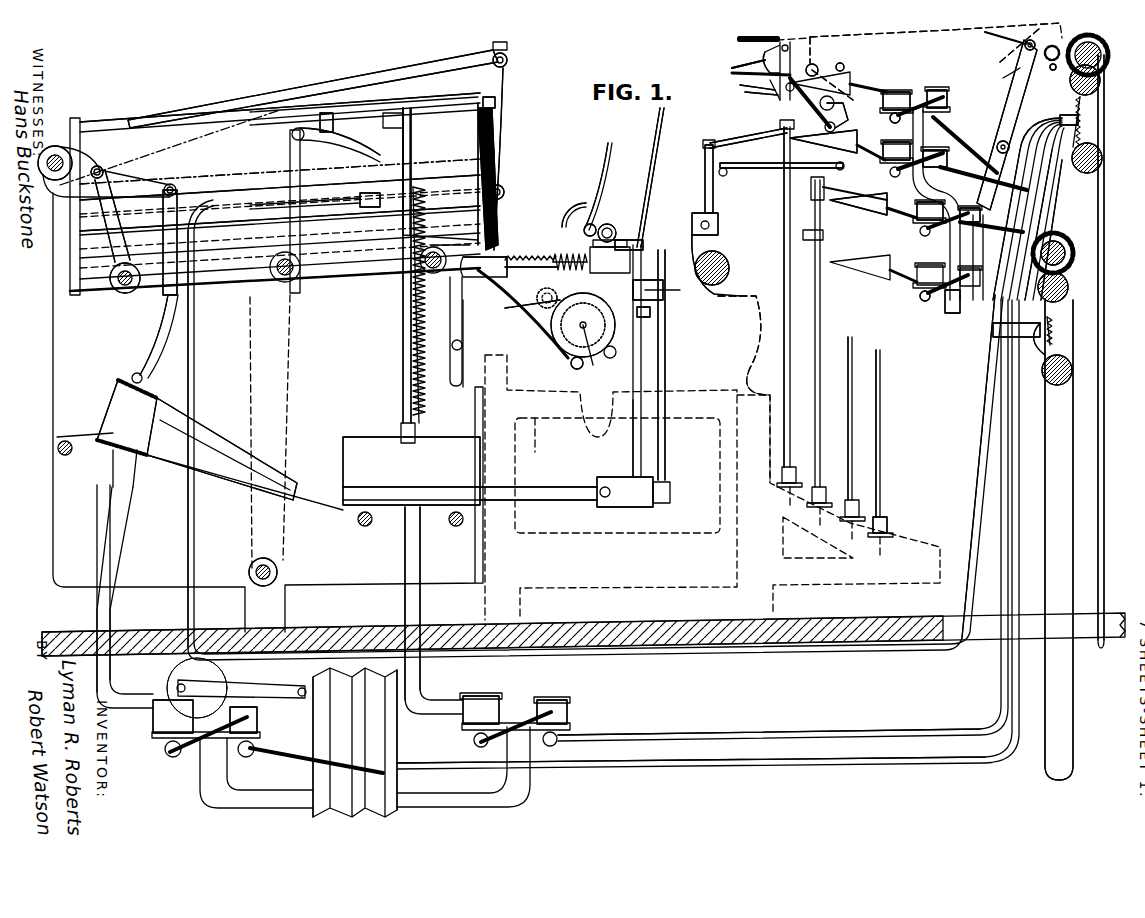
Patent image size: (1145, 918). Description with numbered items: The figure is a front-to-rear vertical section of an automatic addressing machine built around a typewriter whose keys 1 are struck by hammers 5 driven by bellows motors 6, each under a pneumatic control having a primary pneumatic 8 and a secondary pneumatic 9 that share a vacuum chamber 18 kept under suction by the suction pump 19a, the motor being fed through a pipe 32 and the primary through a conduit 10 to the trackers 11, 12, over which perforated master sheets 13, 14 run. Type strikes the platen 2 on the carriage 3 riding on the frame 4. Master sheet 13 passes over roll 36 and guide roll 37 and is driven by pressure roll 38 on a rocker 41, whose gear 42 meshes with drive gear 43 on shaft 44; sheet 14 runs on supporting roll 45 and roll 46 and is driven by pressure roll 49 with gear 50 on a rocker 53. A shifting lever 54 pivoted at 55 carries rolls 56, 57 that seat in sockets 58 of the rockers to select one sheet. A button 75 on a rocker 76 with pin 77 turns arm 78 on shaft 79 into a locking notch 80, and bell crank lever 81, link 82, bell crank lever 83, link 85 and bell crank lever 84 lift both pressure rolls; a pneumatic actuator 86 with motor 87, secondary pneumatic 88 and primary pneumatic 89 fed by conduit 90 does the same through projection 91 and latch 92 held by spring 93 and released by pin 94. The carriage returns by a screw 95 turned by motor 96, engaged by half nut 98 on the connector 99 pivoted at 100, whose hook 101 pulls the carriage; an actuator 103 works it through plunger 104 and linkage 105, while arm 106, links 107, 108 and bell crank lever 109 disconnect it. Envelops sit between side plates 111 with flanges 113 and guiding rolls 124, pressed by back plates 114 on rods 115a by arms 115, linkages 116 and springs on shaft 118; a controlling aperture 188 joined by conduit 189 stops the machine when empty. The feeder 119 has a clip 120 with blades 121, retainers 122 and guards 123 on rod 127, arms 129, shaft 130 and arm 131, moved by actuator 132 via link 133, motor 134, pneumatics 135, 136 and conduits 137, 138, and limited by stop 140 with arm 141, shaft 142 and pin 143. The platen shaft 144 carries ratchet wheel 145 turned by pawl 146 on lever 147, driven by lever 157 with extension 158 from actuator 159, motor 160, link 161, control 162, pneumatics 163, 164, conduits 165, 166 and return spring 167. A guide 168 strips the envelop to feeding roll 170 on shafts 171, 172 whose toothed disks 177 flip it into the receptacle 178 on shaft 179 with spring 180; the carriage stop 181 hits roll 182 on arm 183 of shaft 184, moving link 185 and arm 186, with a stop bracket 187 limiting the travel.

The keys 1 is at (862, 525).
The platen 2 is at (552, 340).
The carriage 3 is at (505, 306).
The typewriter frame 4 is at (755, 365).
The hammers 5 is at (855, 380).
The pneumatic motor 6 is at (845, 222).
The primary pneumatic 8 is at (951, 177).
The secondary pneumatic 9 is at (922, 207).
The conduit 10 is at (1010, 170).
The tracker 11 is at (1078, 122).
The tracker 12 is at (1042, 370).
The master sheet 13 is at (1104, 578).
The master sheet 14 is at (1073, 672).
The vacuum chamber 18 is at (922, 234).
The suction pump 19a is at (375, 748).
The pipe 32 is at (895, 214).
The roll 36 is at (1076, 112).
The guide roll 37 is at (1100, 158).
The pressure roll 38 is at (1100, 45).
The rocker 41 is at (1000, 55).
The gear 42 is at (1100, 82).
The drive gear 43 is at (1050, 62).
The shaft 44 is at (1053, 70).
The supporting roll 45 is at (1055, 320).
The roll 46 is at (1055, 385).
The pressure roll 49 is at (1053, 245).
The gear 50 is at (1073, 253).
The rocker 53 is at (993, 325).
The shifting lever 54 is at (1015, 95).
The pivot 55 is at (998, 147).
The roll 56 is at (1025, 47).
The roll 57 is at (975, 243).
The socket 58 is at (1020, 68).
The button 75 is at (765, 62).
The rocker 76 is at (745, 67).
The pin 77 is at (740, 76).
The arm 78 is at (747, 97).
The shaft 79 is at (813, 64).
The locking notch 80 is at (761, 100).
The bell crank lever 81 is at (800, 47).
The link 82 is at (955, 35).
The bell crank lever 83 is at (1022, 43).
The bell crank lever 84 is at (1066, 292).
The link 85 is at (1033, 195).
The pneumatic actuator 86 is at (896, 92).
The pneumatic motor 87 is at (868, 85).
The secondary pneumatic 88 is at (890, 124).
The primary pneumatic 89 is at (936, 93).
The conduit 90 is at (1038, 345).
The projection 91 is at (789, 92).
The latch 92 is at (800, 95).
The spring 93 is at (740, 40).
The pin 94 is at (777, 94).
The screw 95 is at (729, 268).
The motor 96 is at (197, 690).
The half nut 98 is at (716, 292).
The connector 99 is at (718, 238).
The pivot 100 is at (713, 224).
The hook 101 is at (741, 332).
The pneumatic actuator 103 is at (945, 300).
The plunger 104 is at (760, 170).
The linkage 105 is at (784, 235).
The arm 106 is at (845, 60).
The link 107 is at (840, 80).
The link 108 is at (760, 138).
The bell crank lever 109 is at (848, 113).
The side plates 111 is at (440, 174).
The flanges 113 is at (495, 105).
The back plates 114 is at (392, 70).
The arms 115 is at (292, 160).
The rods 115a is at (320, 226).
The linkages 116 is at (312, 140).
The shaft 118 is at (277, 573).
The feeder 119 is at (250, 110).
The clip 120 is at (500, 82).
The blades 121 is at (495, 175).
The retainers 122 is at (493, 150).
The guards 123 is at (483, 250).
The guiding rolls 124 is at (505, 190).
The rod 127 is at (507, 58).
The arms 129 is at (327, 113).
The shaft 130 is at (55, 150).
The arm 131 is at (150, 182).
The pneumatic actuator 132 is at (110, 423).
The link 133 is at (160, 330).
The pneumatic motor 134 is at (160, 410).
The primary pneumatic 135 is at (257, 716).
The secondary pneumatic 136 is at (155, 725).
The conduit 137 is at (110, 612).
The conduit 138 is at (865, 762).
The stop 140 is at (110, 282).
The arm 141 is at (118, 215).
The shaft 142 is at (163, 298).
The pin 143 is at (103, 170).
The platen shaft 144 is at (591, 369).
The feeding ratchet wheel 145 is at (565, 328).
The pawl 146 is at (600, 298).
The actuating lever 147 is at (538, 298).
The lever 157 is at (310, 290).
The extension 158 is at (570, 258).
The pneumatic actuator 159 is at (355, 475).
The pneumatic motor 160 is at (411, 475).
The link 161 is at (403, 355).
The pneumatic control 162 is at (505, 720).
The primary pneumatic 163 is at (567, 712).
The secondary pneumatic 164 is at (484, 700).
The conduit 165 is at (405, 545).
The conduit 166 is at (815, 733).
The spring 167 is at (425, 385).
The guide 168 is at (610, 260).
The feeding roll 170 is at (574, 215).
The shaft 171 is at (601, 220).
The shaft 172 is at (617, 233).
The toothed disks 177 is at (648, 170).
The receptacle 178 is at (600, 180).
The shaft 179 is at (655, 262).
The spring 180 is at (548, 262).
The stop 181 is at (666, 290).
The roll 182 is at (650, 320).
The arm 183 is at (635, 446).
The shaft 184 is at (543, 503).
The link 185 is at (645, 362).
The arm 186 is at (638, 245).
The stop bracket 187 is at (630, 478).
The controlling aperture 188 is at (400, 205).
The conduit 189 is at (980, 460).